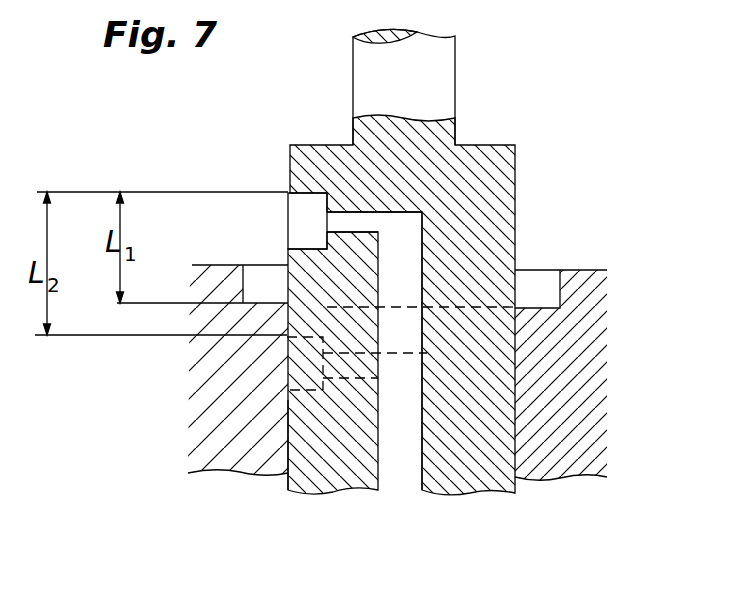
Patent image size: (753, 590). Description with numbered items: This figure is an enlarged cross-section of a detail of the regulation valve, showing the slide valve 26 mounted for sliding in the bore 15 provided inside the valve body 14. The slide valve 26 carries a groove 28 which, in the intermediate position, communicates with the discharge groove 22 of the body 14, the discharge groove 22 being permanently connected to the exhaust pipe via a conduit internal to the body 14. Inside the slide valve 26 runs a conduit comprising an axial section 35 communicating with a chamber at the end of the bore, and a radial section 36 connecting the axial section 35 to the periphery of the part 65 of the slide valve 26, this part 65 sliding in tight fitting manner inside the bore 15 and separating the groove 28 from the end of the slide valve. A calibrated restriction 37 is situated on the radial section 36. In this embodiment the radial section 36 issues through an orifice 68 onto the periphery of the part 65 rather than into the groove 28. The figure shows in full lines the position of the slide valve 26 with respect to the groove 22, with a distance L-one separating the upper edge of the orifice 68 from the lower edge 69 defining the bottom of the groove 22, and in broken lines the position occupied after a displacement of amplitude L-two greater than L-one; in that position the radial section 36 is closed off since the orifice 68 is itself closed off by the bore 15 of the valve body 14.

The valve body 14 is at (567, 472).
The bore 15 is at (289, 456).
The discharge groove 22 is at (531, 306).
The slide valve 26 is at (497, 162).
The groove 28 is at (350, 105).
The axial section 35 is at (398, 421).
The radial section 36 is at (312, 205).
The calibrated restriction 37 is at (357, 222).
The part of the slide valve 65 is at (519, 362).
The orifice 68 is at (287, 199).
The lower edge 69 is at (290, 305).